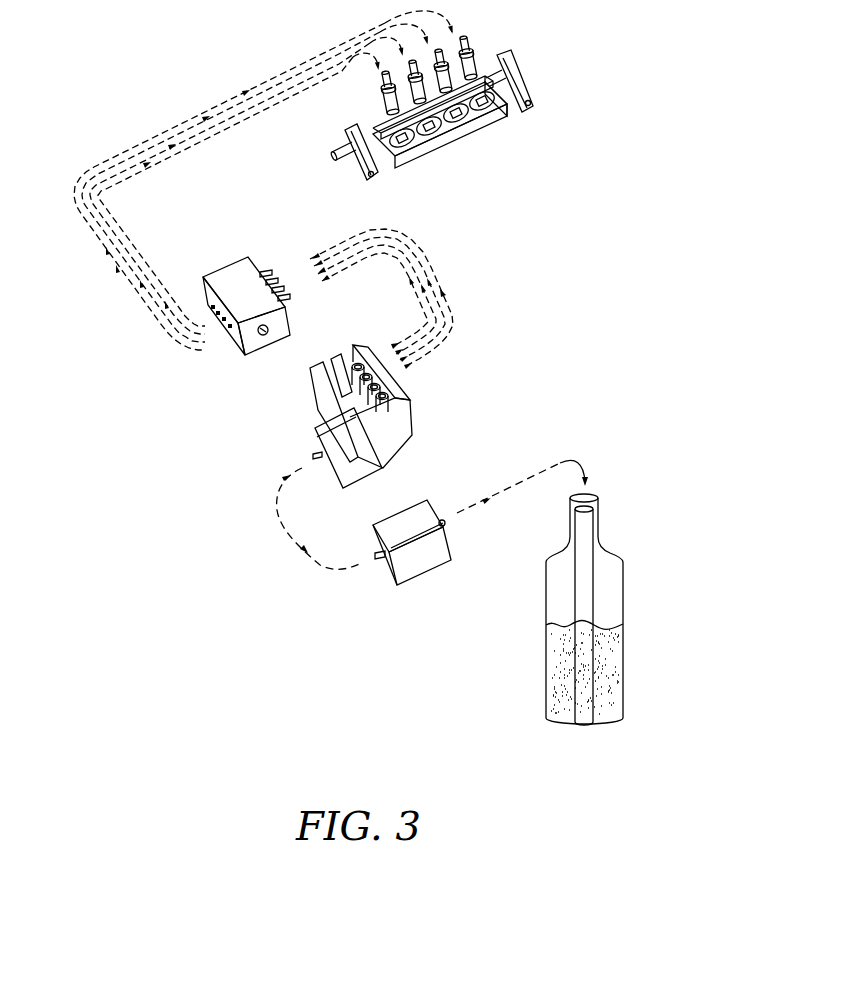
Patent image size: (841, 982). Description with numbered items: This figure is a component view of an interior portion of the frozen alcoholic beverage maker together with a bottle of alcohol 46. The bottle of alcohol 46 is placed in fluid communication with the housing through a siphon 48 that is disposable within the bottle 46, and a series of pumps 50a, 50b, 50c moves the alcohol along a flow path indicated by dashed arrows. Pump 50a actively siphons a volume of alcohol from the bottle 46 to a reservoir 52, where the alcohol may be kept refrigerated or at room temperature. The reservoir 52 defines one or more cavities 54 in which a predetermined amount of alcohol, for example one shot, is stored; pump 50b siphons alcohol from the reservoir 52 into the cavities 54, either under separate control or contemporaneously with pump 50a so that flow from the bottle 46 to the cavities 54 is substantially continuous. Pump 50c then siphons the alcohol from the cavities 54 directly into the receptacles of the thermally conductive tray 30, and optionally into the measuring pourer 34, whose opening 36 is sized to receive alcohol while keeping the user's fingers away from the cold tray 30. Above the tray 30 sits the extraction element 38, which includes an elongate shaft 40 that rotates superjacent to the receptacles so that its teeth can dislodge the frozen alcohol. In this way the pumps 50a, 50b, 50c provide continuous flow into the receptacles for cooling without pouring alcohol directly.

The tray 30 is at (420, 150).
The measuring pourer 34 is at (463, 44).
The opening 36 is at (502, 107).
The extraction element 38 is at (539, 81).
The elongate shaft 40 is at (497, 77).
The bottle of alcohol 46 is at (600, 585).
The siphon 48 is at (583, 521).
The pump 50a is at (404, 502).
The pump 50b is at (322, 419).
The pump 50c is at (258, 355).
The reservoir 52 is at (393, 425).
The cavities 54 is at (381, 386).